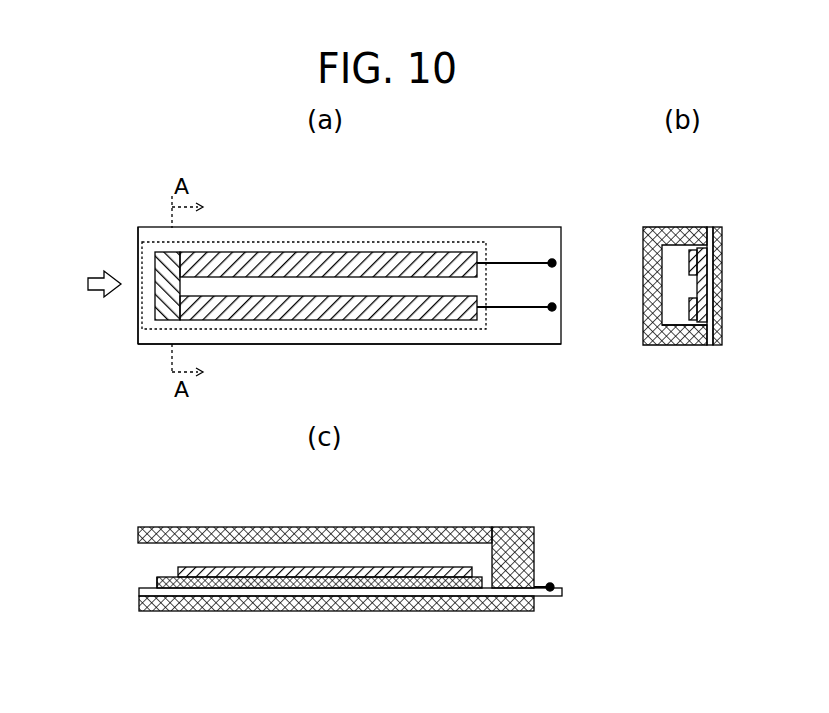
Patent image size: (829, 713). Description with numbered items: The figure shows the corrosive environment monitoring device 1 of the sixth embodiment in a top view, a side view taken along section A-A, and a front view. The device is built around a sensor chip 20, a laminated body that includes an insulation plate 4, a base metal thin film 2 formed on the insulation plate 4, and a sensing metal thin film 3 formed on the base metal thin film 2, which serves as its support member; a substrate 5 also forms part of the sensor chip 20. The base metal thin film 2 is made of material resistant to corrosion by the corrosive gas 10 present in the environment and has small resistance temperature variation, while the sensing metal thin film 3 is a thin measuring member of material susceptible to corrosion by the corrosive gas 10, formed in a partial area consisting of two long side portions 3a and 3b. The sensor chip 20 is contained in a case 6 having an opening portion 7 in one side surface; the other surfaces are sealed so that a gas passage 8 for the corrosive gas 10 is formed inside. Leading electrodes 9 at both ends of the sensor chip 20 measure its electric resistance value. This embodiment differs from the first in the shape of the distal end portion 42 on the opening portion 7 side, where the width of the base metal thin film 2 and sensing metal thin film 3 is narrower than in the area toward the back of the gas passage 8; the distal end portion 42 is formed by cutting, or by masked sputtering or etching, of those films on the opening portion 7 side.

The corrosive environment monitoring device 1 is at (514, 226).
The base metal thin film 2 is at (701, 250).
The sensing metal thin film 3 is at (691, 256).
The long side portion 3a is at (297, 251).
The long side portion 3b is at (298, 321).
The insulation plate 4 is at (717, 266).
The substrate 5 is at (450, 345).
The case 6 is at (646, 320).
The opening portion 7 is at (137, 262).
The gas passage 8 is at (480, 248).
The leading electrodes 9 is at (515, 310).
The corrosive gas 10 is at (92, 275).
The sensor chip 20 is at (118, 570).
The distal end portion 42 is at (186, 312).